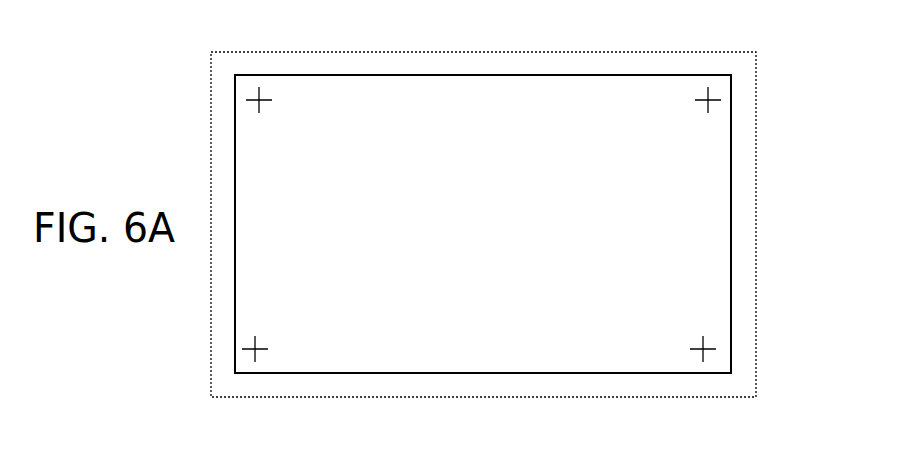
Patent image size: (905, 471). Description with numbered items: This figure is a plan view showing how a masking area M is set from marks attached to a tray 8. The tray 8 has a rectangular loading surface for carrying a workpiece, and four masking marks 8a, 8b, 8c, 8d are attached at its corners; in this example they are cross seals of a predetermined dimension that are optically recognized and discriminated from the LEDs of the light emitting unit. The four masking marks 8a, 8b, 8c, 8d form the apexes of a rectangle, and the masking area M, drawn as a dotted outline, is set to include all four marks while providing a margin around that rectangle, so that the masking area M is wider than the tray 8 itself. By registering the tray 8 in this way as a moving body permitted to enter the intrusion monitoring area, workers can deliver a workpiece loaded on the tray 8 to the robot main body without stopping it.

The masking area M is at (756, 150).
The tray 8 is at (731, 208).
The masking mark 8a is at (721, 100).
The masking mark 8b is at (705, 351).
The masking mark 8c is at (268, 349).
The masking mark 8d is at (272, 100).